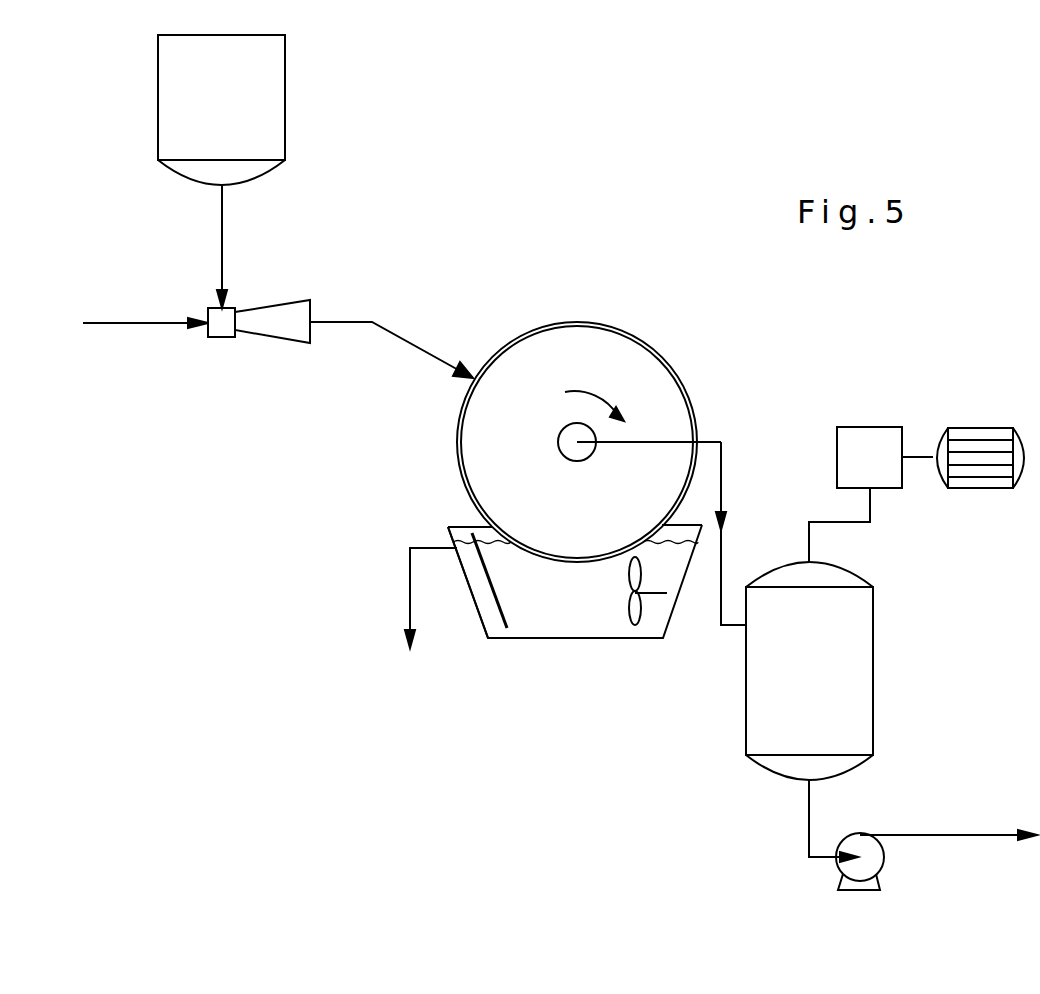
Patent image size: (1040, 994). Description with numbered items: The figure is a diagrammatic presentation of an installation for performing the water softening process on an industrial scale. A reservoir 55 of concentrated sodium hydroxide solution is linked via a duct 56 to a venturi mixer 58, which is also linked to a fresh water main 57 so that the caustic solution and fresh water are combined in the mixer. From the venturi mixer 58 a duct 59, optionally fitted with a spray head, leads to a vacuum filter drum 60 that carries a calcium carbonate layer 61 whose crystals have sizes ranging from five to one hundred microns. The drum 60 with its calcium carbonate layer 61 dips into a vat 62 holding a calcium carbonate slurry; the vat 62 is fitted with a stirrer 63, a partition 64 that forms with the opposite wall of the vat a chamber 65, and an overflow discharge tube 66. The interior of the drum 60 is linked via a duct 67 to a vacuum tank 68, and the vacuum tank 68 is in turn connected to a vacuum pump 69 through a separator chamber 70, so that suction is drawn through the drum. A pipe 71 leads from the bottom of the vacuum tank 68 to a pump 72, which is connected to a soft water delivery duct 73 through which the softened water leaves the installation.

The reservoir 55 is at (272, 103).
The duct 56 is at (223, 233).
The fresh water main 57 is at (123, 318).
The venturi mixer 58 is at (280, 328).
The duct 59 is at (402, 342).
The vacuum filter drum 60 is at (662, 402).
The calcium carbonate layer 61 is at (542, 327).
The vat 62 is at (553, 630).
The stirrer 63 is at (635, 625).
The partition 64 is at (492, 588).
The chamber 65 is at (480, 590).
The overflow discharge tube 66 is at (410, 585).
The duct 67 is at (723, 483).
The vacuum tank 68 is at (858, 677).
The vacuum pump 69 is at (983, 490).
The separator chamber 70 is at (862, 438).
The pipe 71 is at (809, 810).
The pump 72 is at (873, 858).
The soft water delivery duct 73 is at (955, 830).